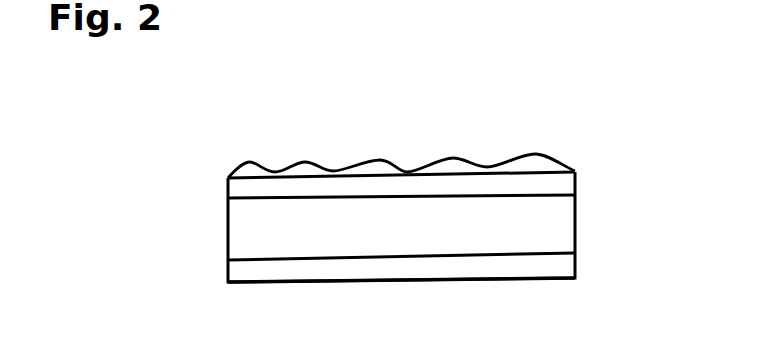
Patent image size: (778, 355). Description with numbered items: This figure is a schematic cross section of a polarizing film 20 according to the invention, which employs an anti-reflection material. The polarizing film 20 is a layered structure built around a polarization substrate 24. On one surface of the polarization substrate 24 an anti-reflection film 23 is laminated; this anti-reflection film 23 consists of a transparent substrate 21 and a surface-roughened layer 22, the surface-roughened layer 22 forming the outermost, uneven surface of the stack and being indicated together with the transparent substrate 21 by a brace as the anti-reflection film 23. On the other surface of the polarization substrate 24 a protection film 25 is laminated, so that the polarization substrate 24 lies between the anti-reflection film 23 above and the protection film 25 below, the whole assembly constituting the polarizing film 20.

The polarizing film 20 is at (584, 227).
The transparent substrate 21 is at (468, 176).
The surface-roughened layer 22 is at (312, 173).
The anti-reflection film 23 is at (587, 148).
The polarization substrate 24 is at (302, 240).
The protection film 25 is at (448, 268).